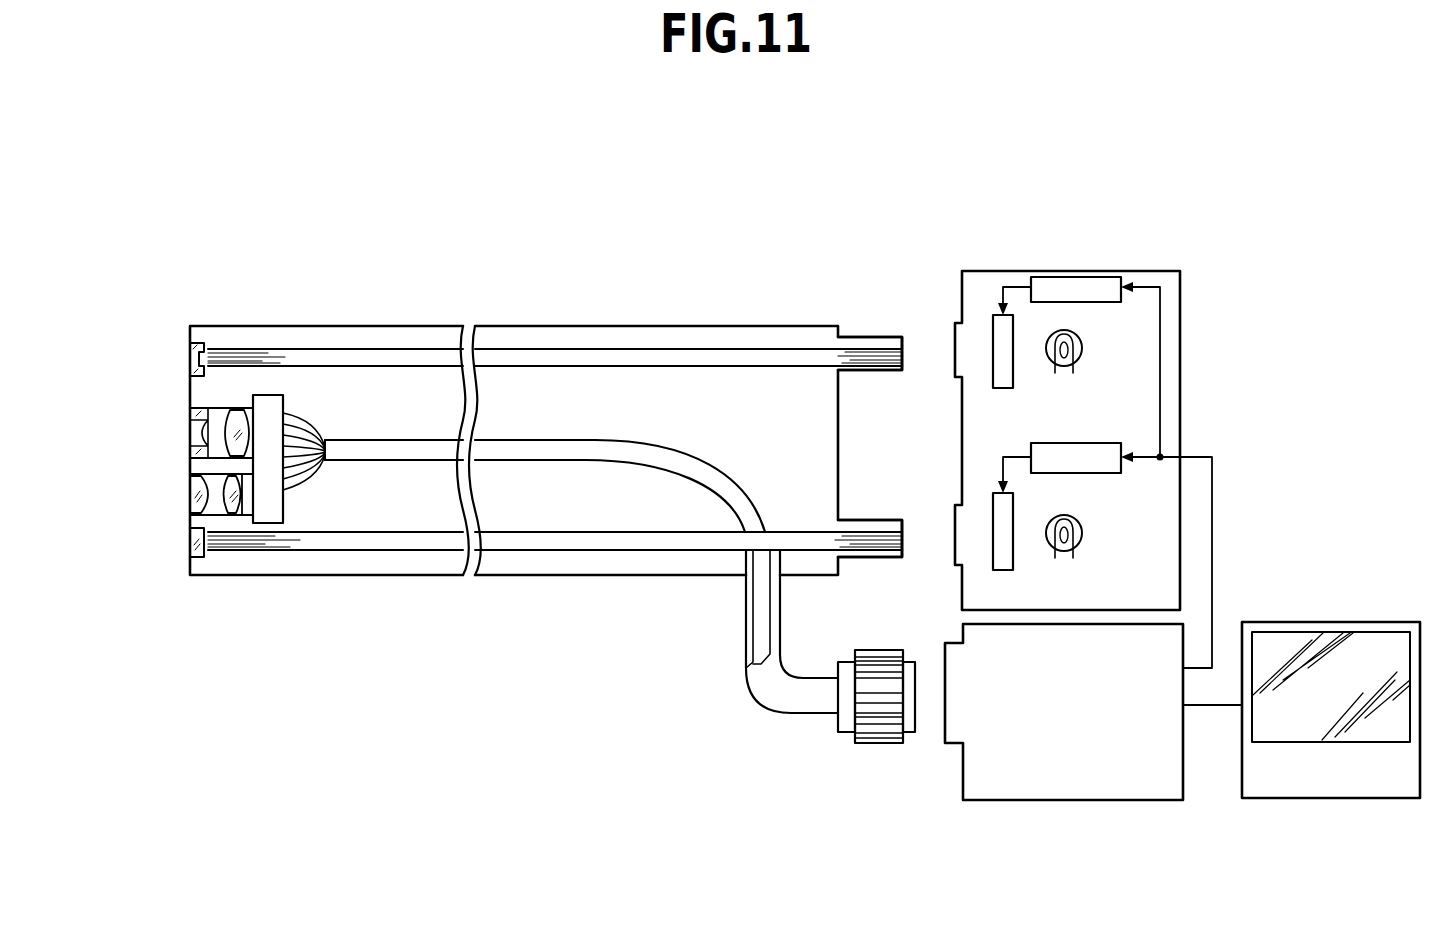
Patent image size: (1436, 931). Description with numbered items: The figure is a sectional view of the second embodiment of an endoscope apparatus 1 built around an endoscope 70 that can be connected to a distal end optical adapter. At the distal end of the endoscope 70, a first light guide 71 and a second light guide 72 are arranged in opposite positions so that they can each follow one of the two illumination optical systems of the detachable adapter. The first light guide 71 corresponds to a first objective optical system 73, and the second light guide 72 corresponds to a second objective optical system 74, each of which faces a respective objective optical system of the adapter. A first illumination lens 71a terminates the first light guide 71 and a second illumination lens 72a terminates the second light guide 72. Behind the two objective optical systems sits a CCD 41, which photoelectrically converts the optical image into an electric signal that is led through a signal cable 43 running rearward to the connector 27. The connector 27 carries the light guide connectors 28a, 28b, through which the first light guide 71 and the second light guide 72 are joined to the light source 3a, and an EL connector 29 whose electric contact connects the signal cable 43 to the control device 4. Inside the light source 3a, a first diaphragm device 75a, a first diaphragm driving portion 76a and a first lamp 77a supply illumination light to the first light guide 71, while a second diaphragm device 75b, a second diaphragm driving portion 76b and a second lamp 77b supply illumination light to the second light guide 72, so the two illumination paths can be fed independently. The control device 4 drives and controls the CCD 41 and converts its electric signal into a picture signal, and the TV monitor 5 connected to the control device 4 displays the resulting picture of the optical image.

The endoscope apparatus 1 is at (668, 198).
The endoscope 70 is at (305, 250).
The connector 27 is at (707, 326).
The first light guide 71 is at (275, 355).
The first illumination lens 71a is at (178, 350).
The second light guide 72 is at (308, 545).
The second illumination lens 72a is at (190, 555).
The first objective optical system 73 is at (180, 430).
The second objective optical system 74 is at (180, 493).
The CCD 41 is at (300, 406).
The signal cable 43 is at (551, 438).
The light guide connector 28a is at (868, 336).
The light guide connector 28b is at (871, 519).
The EL connector 29 is at (876, 746).
The light source 3a is at (1024, 270).
The first diaphragm device 75a is at (997, 337).
The second diaphragm device 75b is at (1000, 553).
The first diaphragm driving portion 76a is at (1100, 285).
The second diaphragm driving portion 76b is at (1100, 452).
The first lamp 77a is at (1084, 347).
The second lamp 77b is at (1084, 534).
The control device 4 is at (1089, 801).
The TV monitor 5 is at (1343, 801).